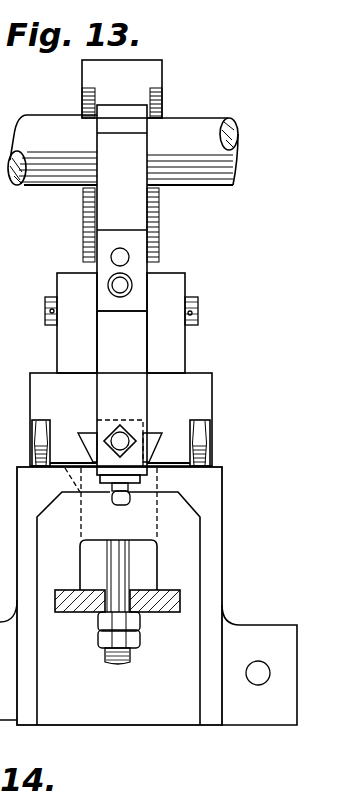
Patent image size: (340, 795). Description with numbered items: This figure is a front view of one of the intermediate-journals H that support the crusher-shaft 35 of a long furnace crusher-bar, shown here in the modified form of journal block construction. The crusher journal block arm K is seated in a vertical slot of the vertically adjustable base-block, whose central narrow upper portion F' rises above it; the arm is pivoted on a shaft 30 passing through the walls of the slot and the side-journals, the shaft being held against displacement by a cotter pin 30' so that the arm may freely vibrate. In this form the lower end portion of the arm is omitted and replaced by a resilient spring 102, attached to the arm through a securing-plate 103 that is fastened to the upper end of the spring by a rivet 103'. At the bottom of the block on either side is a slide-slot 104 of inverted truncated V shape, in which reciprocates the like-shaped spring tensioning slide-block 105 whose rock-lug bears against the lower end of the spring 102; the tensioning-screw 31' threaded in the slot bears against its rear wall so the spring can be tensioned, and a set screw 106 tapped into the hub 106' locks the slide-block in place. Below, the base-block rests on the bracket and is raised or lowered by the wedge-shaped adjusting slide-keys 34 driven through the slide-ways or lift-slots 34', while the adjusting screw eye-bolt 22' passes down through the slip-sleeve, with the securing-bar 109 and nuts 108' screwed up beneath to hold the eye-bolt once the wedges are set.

The crusher-shaft 35 is at (123, 150).
The crusher journal block arm K is at (122, 290).
The resilient spring 102 is at (108, 280).
The securing-plate 103 is at (122, 325).
The rivet 103' is at (157, 257).
The shaft 30 is at (139, 311).
The cotter pin 30' is at (141, 324).
The central narrow upper portion of base-block F' is at (133, 419).
The wedge-shaped adjusting slide-key 34 is at (124, 443).
The slide-way or lift-slot 34' is at (120, 449).
The spring tensioning slide-block 105 is at (85, 428).
The slide-slot 104 is at (162, 431).
The tensioning-screw 31' is at (120, 429).
The set screw 106 is at (119, 513).
The hub 106' is at (105, 503).
The intermediate-journal H is at (148, 596).
The securing-bar 109 is at (68, 612).
The nuts 108' is at (91, 636).
The adjusting screw eye-bolt 22' is at (117, 617).